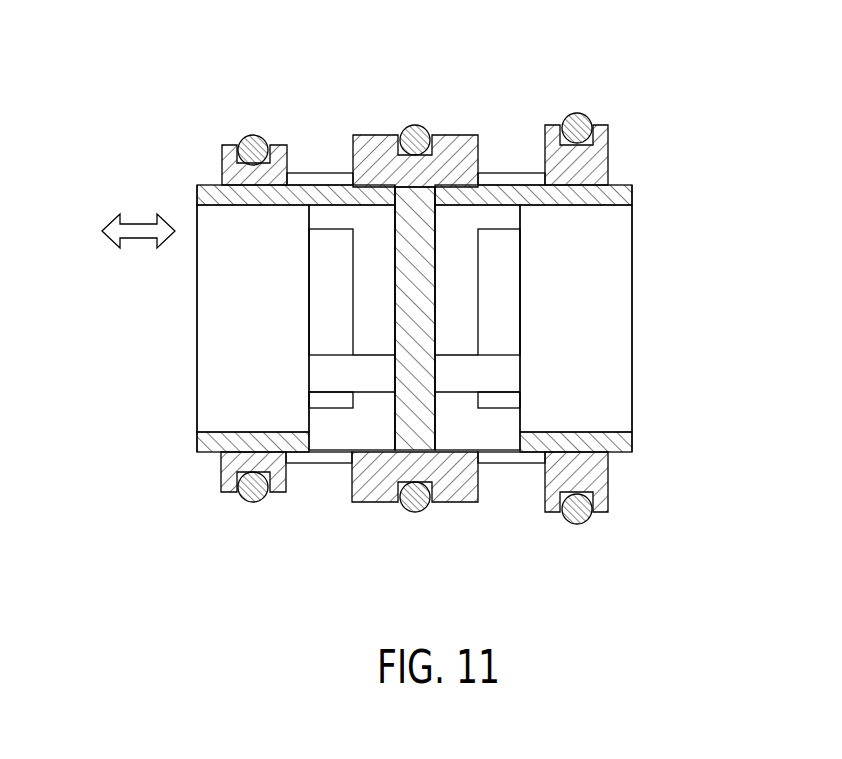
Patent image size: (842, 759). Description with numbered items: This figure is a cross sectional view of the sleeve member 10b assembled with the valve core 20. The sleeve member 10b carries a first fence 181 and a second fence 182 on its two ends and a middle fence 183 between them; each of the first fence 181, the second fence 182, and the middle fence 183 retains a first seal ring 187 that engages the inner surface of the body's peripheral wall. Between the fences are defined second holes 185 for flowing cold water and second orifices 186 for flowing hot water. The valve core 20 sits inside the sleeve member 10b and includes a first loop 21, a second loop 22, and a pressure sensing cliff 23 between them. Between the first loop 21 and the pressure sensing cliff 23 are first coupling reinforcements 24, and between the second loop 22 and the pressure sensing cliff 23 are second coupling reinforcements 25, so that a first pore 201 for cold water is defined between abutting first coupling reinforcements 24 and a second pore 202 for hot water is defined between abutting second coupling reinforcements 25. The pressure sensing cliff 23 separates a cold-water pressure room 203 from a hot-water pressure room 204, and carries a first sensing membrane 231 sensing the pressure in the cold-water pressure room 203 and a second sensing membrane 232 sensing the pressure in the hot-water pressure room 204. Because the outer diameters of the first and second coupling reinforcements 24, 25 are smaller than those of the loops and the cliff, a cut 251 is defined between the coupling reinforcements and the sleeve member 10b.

The sleeve member 10b is at (632, 190).
The valve core 20 is at (408, 250).
The first loop 21 is at (210, 183).
The second loop 22 is at (622, 190).
The pressure sensing cliff 23 is at (498, 269).
The first coupling reinforcements 24 is at (337, 190).
The second coupling reinforcements 25 is at (505, 190).
The first fence 181 is at (189, 117).
The second fence 182 is at (602, 125).
The middle fence 183 is at (424, 98).
The second holes 185 is at (325, 302).
The second orifices 186 is at (500, 311).
The first seal ring 187 is at (248, 136).
The first pore 201 is at (256, 373).
The second pore 202 is at (575, 374).
The cold-water pressure room 203 is at (240, 360).
The hot-water pressure room 204 is at (590, 377).
The first sensing membrane 231 is at (395, 258).
The second sensing membrane 232 is at (437, 260).
The cut 251 is at (372, 185).